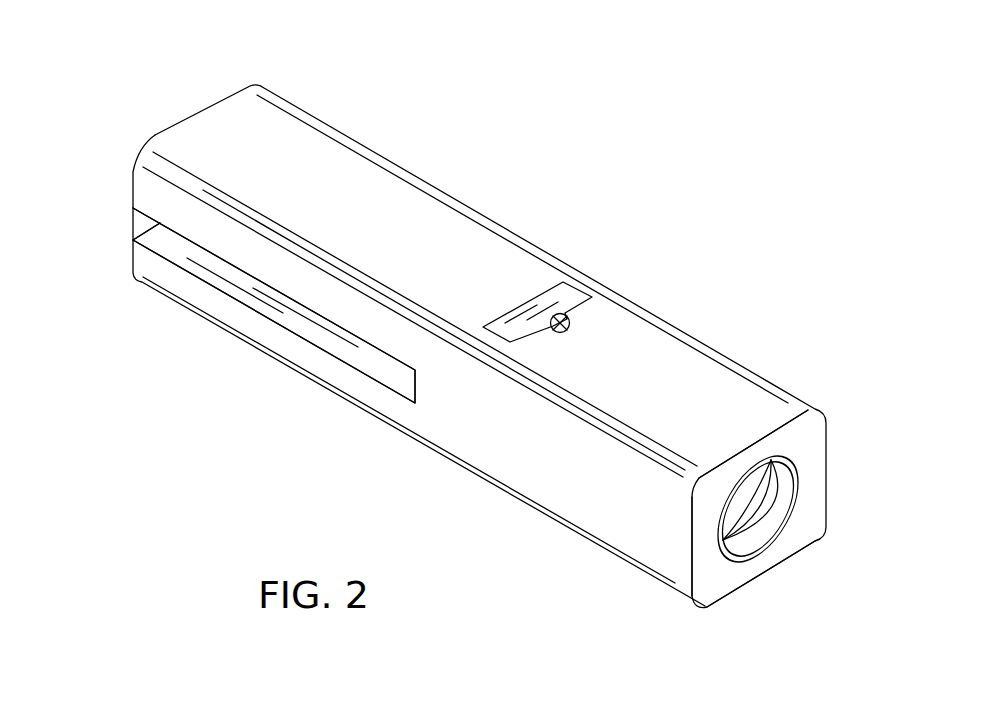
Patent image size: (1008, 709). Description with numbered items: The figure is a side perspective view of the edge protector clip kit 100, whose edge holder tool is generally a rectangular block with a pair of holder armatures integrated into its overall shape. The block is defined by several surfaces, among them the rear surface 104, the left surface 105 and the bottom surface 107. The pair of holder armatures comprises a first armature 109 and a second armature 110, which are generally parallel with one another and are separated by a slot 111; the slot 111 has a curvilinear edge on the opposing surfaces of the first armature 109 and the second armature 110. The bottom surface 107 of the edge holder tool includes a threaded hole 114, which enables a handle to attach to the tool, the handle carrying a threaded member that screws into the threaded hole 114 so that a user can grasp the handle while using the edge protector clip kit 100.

The edge protector clip kit 100 is at (678, 103).
The rear surface 104 is at (347, 173).
The left surface 105 is at (520, 447).
The bottom surface 107 is at (817, 469).
The first armature 109 is at (220, 232).
The second armature 110 is at (270, 338).
The slot 111 is at (128, 217).
The threaded hole 114 is at (753, 520).